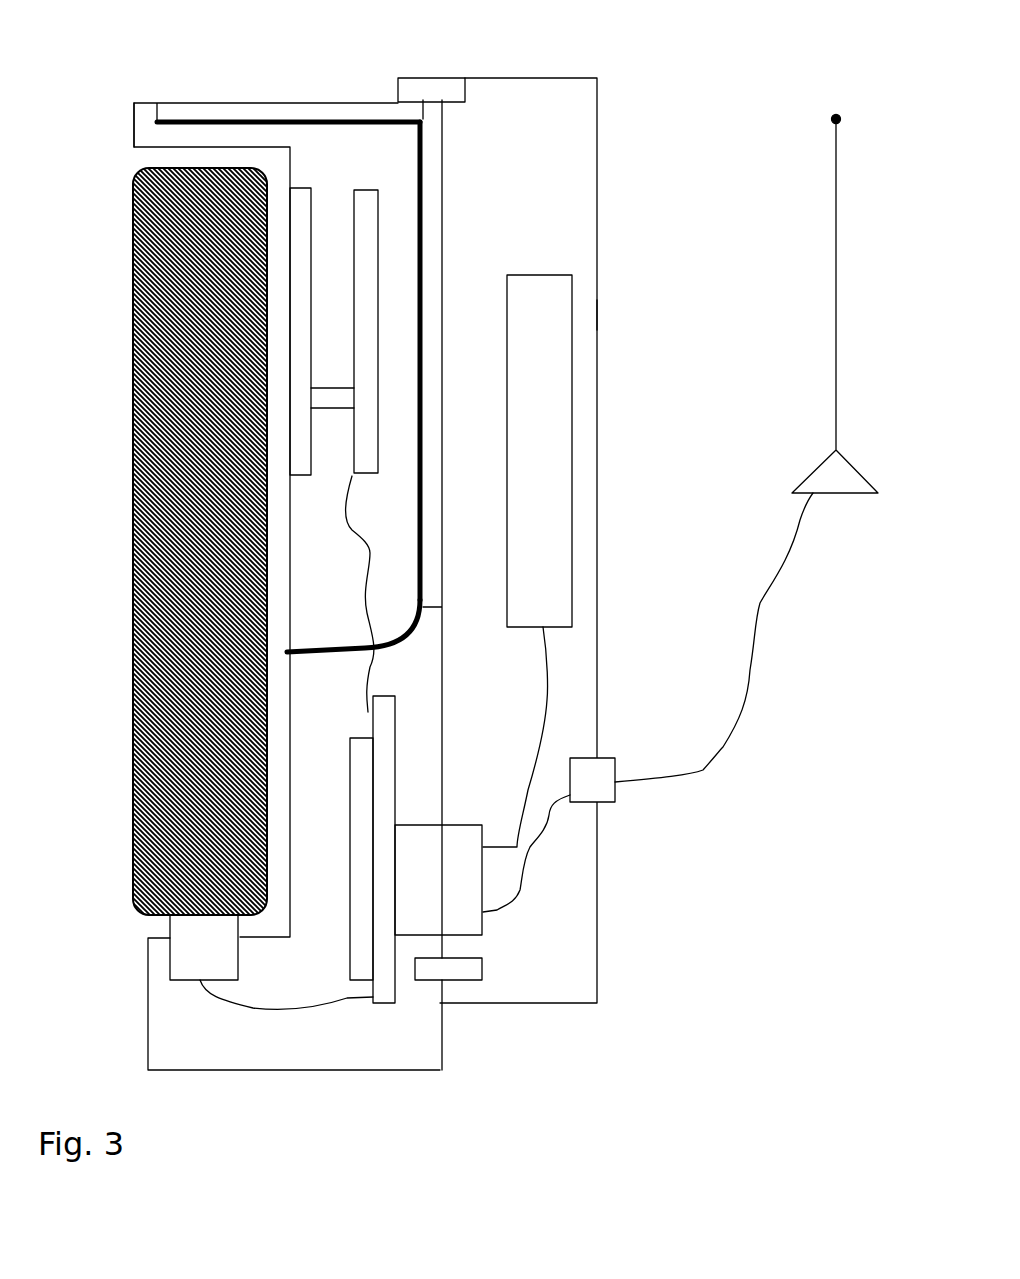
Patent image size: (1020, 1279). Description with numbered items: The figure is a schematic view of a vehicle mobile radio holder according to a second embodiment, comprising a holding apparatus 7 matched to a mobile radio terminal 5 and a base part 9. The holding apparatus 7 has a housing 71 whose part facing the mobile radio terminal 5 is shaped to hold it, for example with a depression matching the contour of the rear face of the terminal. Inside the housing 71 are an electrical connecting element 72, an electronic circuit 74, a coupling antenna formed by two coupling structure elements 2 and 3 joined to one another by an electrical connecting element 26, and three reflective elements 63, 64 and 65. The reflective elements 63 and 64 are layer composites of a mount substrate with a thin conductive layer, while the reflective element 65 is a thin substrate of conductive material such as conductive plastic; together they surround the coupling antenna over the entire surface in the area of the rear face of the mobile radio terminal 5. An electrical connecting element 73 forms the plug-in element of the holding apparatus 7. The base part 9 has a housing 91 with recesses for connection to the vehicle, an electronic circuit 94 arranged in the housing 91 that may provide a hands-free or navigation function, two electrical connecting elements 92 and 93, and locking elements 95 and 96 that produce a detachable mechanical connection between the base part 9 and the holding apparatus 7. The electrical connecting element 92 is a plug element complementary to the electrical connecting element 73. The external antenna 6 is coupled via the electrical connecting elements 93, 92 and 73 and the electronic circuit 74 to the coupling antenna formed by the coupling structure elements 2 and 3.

The coupling structure element 2 is at (302, 197).
The coupling structure element 3 is at (366, 197).
The mobile radio terminal 5 is at (146, 430).
The external antenna 6 is at (848, 300).
The holding apparatus 7 is at (290, 95).
The base part 9 is at (604, 152).
The electrical connecting element 26 is at (328, 388).
The reflective element 63 is at (208, 108).
The reflective element 64 is at (438, 201).
The reflective element 65 is at (324, 657).
The housing 71 is at (134, 128).
The electrical connecting element 72 is at (183, 945).
The electrical connecting element 73 is at (415, 830).
The electronic circuit 74 is at (350, 958).
The housing 91 is at (543, 77).
The electrical connecting element 92 is at (462, 830).
The electrical connecting element 93 is at (602, 763).
The electronic circuit 94 is at (560, 417).
The locking element 95 is at (423, 85).
The locking element 96 is at (465, 985).